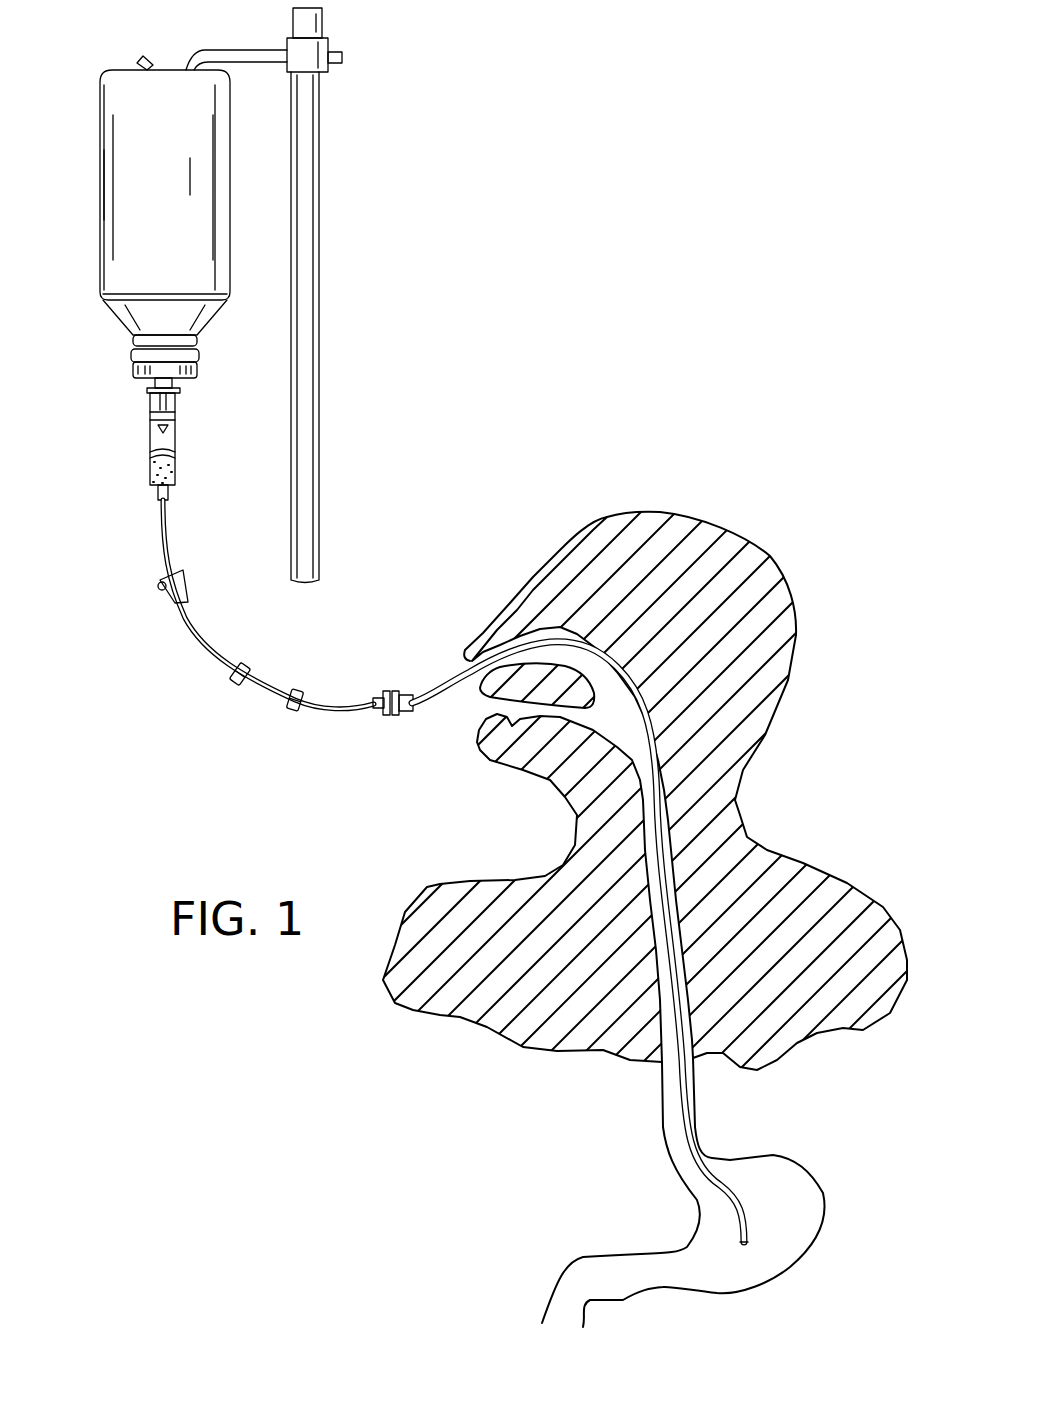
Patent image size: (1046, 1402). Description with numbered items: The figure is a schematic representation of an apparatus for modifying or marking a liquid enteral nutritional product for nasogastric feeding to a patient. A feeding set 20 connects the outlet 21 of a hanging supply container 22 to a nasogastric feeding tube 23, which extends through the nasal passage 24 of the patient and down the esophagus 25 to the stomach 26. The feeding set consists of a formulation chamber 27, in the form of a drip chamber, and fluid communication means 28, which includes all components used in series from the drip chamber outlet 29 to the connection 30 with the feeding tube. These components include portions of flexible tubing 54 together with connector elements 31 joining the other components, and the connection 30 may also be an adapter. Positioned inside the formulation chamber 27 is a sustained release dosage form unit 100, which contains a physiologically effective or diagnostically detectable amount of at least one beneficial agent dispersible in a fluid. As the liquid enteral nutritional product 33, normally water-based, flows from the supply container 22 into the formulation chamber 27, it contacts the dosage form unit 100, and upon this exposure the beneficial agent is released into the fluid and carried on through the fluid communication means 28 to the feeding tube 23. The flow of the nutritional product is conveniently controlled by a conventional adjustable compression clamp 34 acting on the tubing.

The feeding set 20 is at (160, 637).
The outlet 21 is at (197, 368).
The hanging supply container 22 is at (182, 129).
The nasogastric feeding tube 23 is at (452, 680).
The nasal passage 24 is at (548, 636).
The esophagus 25 is at (670, 812).
The stomach 26 is at (795, 1190).
The formulation chamber 27 is at (176, 432).
The fluid communication means 28 is at (239, 634).
The drip chamber outlet 29 is at (155, 498).
The connection 30 is at (400, 716).
The connector elements 31 is at (297, 692).
The liquid enteral nutritional product 33 is at (135, 180).
The adjustable compression clamp 34 is at (186, 582).
The flexible tubing 54 is at (204, 650).
The sustained release dosage form unit 100 is at (150, 476).